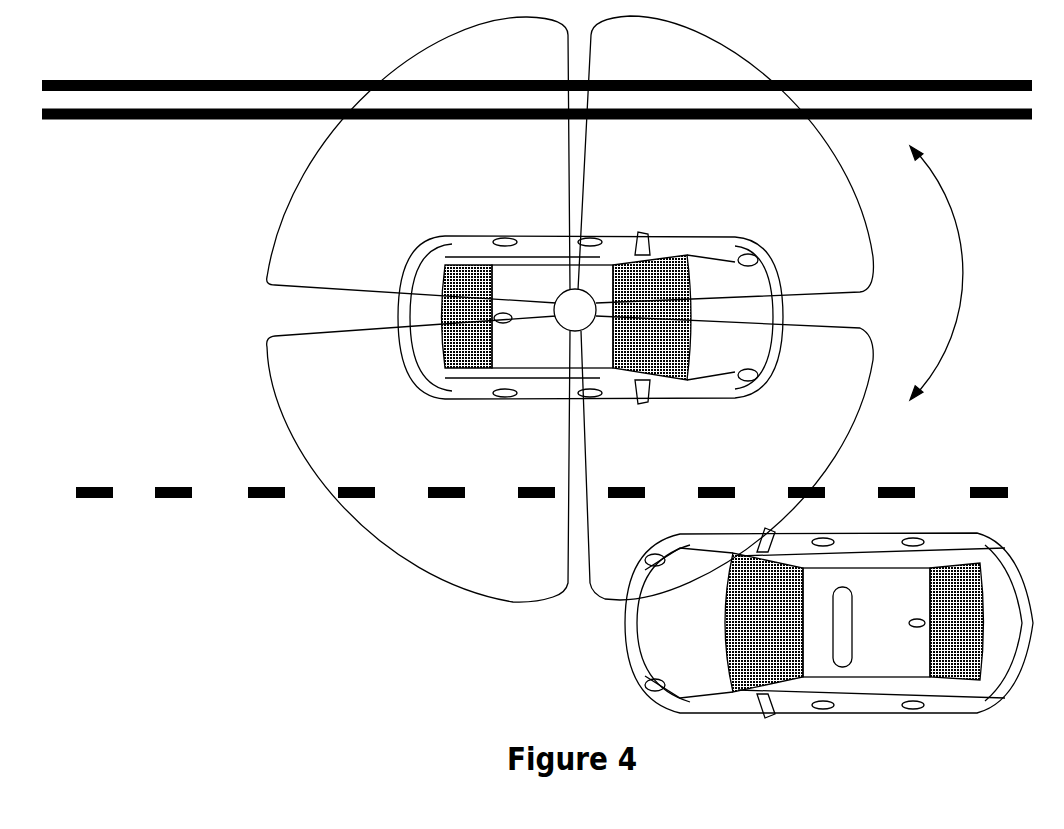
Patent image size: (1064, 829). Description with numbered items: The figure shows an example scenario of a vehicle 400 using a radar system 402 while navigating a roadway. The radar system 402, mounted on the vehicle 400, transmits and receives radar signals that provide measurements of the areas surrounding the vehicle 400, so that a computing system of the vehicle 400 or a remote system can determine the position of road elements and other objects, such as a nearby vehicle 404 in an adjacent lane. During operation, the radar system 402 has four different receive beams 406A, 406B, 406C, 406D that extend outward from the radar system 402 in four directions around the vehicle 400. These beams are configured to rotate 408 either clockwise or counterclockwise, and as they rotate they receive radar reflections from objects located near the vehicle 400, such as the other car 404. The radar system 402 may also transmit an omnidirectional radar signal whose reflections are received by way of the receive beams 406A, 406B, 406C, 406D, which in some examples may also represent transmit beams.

The vehicle 400 is at (598, 238).
The radar system 402 is at (560, 328).
The vehicle 404 is at (633, 675).
The receive beam 406A is at (872, 208).
The receive beam 406B is at (875, 388).
The receive beam 406C is at (270, 387).
The receive beam 406D is at (275, 203).
The rotation 408 is at (963, 268).